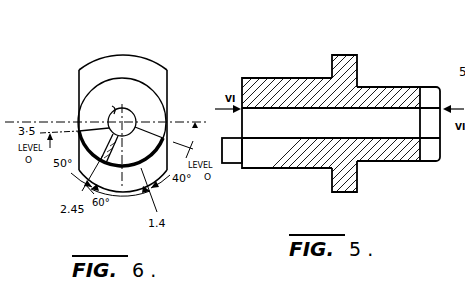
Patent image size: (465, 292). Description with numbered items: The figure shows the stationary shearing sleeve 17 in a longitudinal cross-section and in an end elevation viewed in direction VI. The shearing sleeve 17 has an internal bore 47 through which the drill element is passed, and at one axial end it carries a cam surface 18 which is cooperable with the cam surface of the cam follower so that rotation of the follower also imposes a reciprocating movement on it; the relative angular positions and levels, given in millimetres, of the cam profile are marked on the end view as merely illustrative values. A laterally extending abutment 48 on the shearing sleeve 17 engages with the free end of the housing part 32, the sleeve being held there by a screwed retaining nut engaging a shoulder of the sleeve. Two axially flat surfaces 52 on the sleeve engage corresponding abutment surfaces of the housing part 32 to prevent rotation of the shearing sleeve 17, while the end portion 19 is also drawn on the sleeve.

In FIG. 6, the shearing sleeve 17 is at (78, 80).
In FIG. 6, the cam surface 18 is at (148, 149).
In FIG. 5, the cam surface 18 is at (230, 155).
In FIG. 5, the end head 19 is at (430, 92).
In FIG. 6, the housing part 32 is at (143, 100).
In FIG. 5, the housing part 32 is at (282, 82).
In FIG. 6, the internal bore 47 is at (112, 106).
In FIG. 5, the internal bore 47 is at (368, 117).
In FIG. 6, the laterally extending abutment 48 is at (148, 68).
In FIG. 5, the laterally extending abutment 48 is at (340, 60).
In FIG. 6, the axially flat surfaces 52 is at (168, 73).